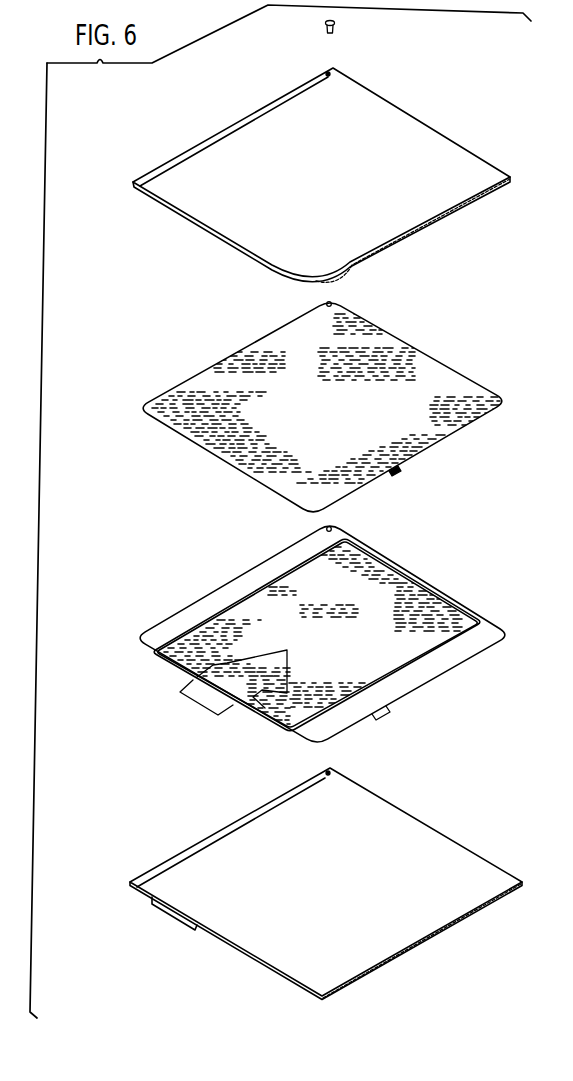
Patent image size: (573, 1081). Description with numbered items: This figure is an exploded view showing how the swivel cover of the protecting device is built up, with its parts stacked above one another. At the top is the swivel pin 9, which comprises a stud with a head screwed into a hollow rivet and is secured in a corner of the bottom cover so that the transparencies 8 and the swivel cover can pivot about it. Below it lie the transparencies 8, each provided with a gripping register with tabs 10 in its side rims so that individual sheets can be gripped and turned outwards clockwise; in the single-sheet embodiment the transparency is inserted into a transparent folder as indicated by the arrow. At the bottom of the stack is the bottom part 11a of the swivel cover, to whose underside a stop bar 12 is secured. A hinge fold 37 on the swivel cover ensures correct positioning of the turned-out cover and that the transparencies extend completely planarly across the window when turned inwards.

The transparencies 8 is at (307, 353).
The swivel pin 9 is at (336, 28).
The gripping register tabs 10 is at (401, 474).
The bottom part 11a is at (358, 933).
The stop bar 12 is at (190, 926).
The hinge fold 37 is at (213, 147).